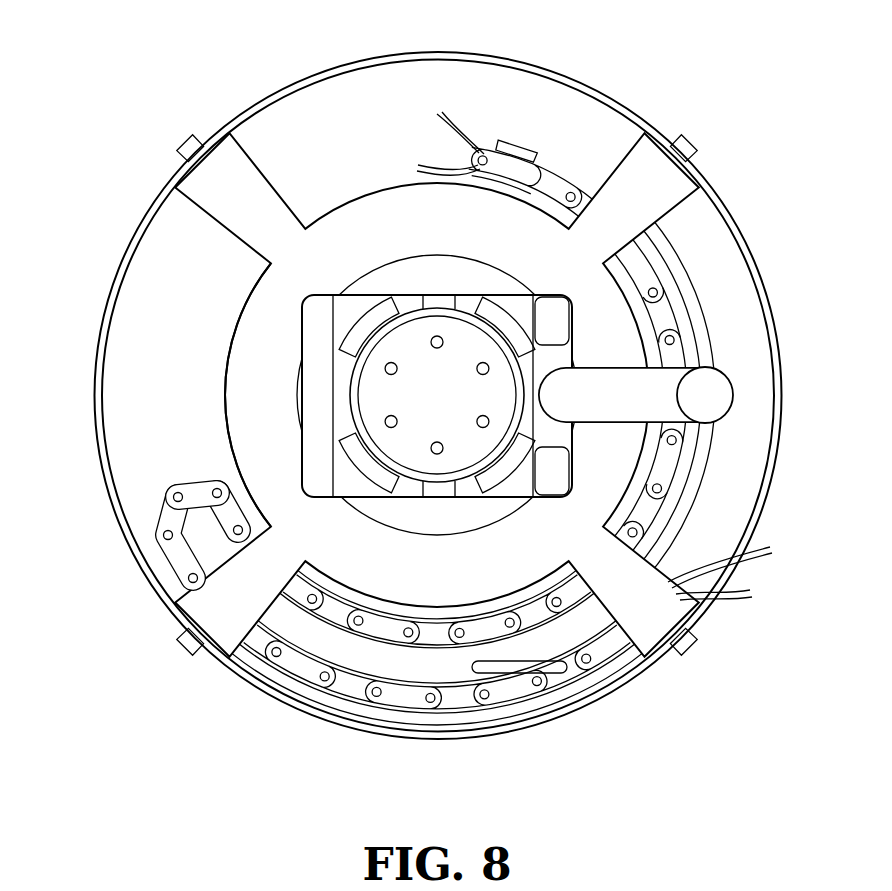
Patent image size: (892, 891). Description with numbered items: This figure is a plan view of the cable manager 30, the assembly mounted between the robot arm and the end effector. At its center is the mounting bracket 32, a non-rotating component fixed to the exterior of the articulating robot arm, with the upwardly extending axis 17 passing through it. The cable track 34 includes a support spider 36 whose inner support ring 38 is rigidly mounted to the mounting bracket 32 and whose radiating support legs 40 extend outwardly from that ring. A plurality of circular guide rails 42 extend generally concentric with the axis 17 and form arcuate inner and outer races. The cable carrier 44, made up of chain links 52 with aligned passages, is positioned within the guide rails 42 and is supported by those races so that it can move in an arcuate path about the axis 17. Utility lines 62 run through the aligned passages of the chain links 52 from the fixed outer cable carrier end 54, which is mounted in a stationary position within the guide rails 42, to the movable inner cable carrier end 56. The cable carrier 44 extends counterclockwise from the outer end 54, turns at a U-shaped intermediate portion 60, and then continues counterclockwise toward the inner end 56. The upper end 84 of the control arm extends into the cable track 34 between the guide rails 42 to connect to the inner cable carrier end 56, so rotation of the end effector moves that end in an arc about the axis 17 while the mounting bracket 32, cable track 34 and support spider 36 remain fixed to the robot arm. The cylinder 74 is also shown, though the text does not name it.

The cable manager 30 is at (714, 128).
The cable track 34 is at (292, 74).
The circular guide rails 42 is at (163, 188).
The radiating support legs 40 is at (241, 203).
The support spider 36 is at (251, 292).
The inner support ring 38 is at (228, 330).
The mounting bracket 32 is at (346, 318).
The upwardly extending axis 17 is at (432, 392).
The cylinder 74 is at (602, 410).
The inner cable carrier end 56 is at (487, 155).
The upper end of the control arm 84 is at (524, 147).
The utility lines 62 is at (459, 132).
The U-shaped intermediate portion 60 is at (190, 483).
The chain links 52 is at (371, 618).
The outer cable carrier end 54 is at (637, 657).
The cable carrier 44 is at (338, 694).